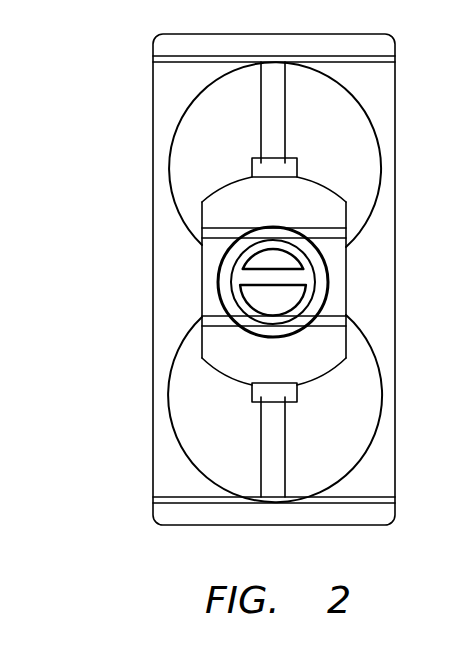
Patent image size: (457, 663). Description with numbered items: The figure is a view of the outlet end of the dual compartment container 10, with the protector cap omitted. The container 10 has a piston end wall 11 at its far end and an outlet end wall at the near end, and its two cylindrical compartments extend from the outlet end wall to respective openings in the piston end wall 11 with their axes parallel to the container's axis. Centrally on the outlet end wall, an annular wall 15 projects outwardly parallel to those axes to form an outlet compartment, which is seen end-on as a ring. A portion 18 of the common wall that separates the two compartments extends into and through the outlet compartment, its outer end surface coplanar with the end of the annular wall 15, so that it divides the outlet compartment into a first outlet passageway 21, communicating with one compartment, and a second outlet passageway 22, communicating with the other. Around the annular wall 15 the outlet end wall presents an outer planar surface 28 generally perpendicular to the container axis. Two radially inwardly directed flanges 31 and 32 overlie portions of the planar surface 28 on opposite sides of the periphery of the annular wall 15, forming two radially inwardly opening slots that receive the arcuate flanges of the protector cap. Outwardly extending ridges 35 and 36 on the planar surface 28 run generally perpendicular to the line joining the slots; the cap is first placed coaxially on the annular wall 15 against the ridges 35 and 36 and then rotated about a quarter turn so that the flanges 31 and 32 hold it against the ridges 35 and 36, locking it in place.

The dual compartment container 10 is at (386, 127).
The piston end wall 11 is at (153, 133).
The annular wall 15 is at (253, 230).
The portion of the common wall 18 is at (256, 278).
The first outlet passageway 21 is at (280, 251).
The second outlet passageway 22 is at (277, 304).
The outer planar surface 28 is at (232, 364).
The radially inwardly directed flange 31 is at (298, 161).
The radially inwardly directed flange 32 is at (298, 402).
The ridge 35 is at (213, 227).
The ridge 36 is at (212, 337).